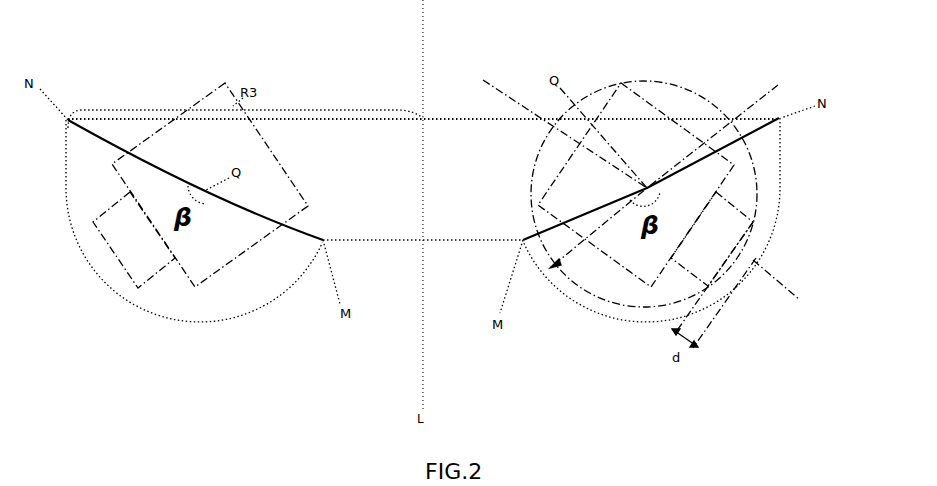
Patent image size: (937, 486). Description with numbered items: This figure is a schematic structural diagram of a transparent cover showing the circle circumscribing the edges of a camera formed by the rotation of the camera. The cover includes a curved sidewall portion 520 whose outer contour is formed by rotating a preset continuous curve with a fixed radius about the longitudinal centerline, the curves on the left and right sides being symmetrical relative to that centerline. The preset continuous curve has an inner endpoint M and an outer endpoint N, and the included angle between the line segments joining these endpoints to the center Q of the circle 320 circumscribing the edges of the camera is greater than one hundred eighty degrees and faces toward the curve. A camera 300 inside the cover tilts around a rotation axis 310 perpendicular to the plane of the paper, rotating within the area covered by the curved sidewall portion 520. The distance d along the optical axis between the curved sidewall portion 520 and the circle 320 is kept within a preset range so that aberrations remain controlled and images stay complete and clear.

The camera 300 is at (645, 107).
The rotation axis 310 is at (647, 188).
The circle circumscribing the edges of the camera 320 is at (677, 167).
The curved sidewall portion 520 is at (777, 213).